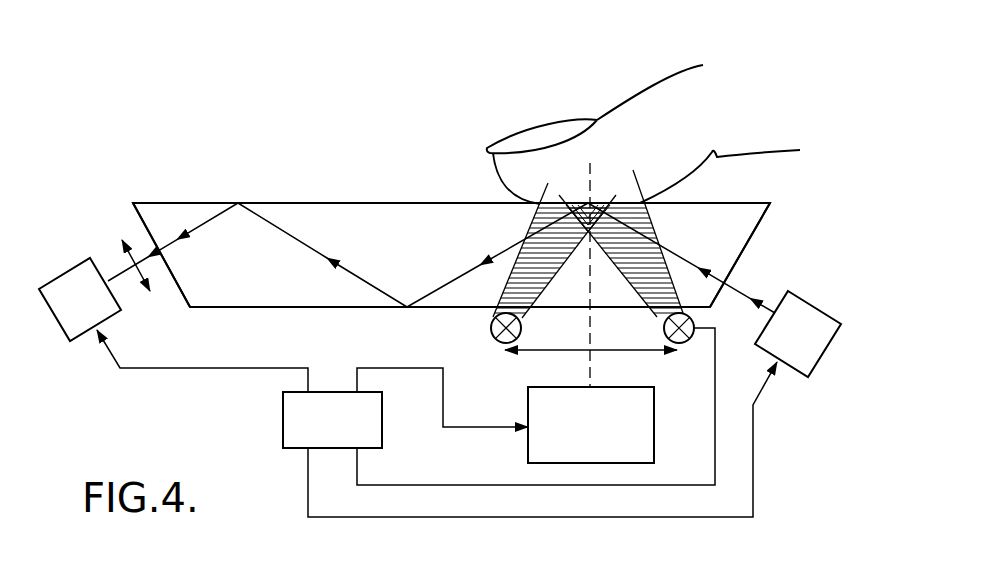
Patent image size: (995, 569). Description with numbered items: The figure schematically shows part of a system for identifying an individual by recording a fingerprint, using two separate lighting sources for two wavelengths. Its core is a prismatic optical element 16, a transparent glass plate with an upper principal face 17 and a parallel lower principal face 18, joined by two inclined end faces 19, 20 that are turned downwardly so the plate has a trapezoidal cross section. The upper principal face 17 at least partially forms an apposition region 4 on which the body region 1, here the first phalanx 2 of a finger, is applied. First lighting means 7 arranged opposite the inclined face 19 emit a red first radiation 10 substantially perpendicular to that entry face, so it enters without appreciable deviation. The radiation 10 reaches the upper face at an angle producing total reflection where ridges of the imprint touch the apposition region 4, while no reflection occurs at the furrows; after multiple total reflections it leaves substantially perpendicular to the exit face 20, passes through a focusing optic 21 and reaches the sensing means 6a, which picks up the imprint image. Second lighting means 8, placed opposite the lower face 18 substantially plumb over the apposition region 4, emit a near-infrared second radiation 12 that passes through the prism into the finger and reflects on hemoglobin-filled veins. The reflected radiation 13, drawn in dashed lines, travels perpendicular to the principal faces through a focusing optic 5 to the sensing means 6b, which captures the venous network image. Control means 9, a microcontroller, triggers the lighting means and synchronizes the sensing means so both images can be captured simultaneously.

The region of the individual's body 1 is at (662, 122).
The first phalanx 2 is at (545, 163).
The apposition region 4 is at (540, 202).
The focusing optic 5 is at (630, 350).
The sensing means 6a is at (90, 314).
The sensing means 6b is at (604, 441).
The first lighting means 7 is at (812, 346).
The second lighting means 8 is at (491, 330).
The control means 9 is at (349, 433).
The first radiation 10 is at (285, 233).
The second radiation 12 is at (640, 253).
The reflected radiation 13 is at (589, 318).
The prismatic optical element 16 is at (367, 232).
The upper principal face 17 is at (283, 203).
The lower principal face 18 is at (302, 308).
The inclined end face 19 is at (757, 230).
The inclined end face 20 is at (125, 237).
The focusing optic 21 is at (120, 246).